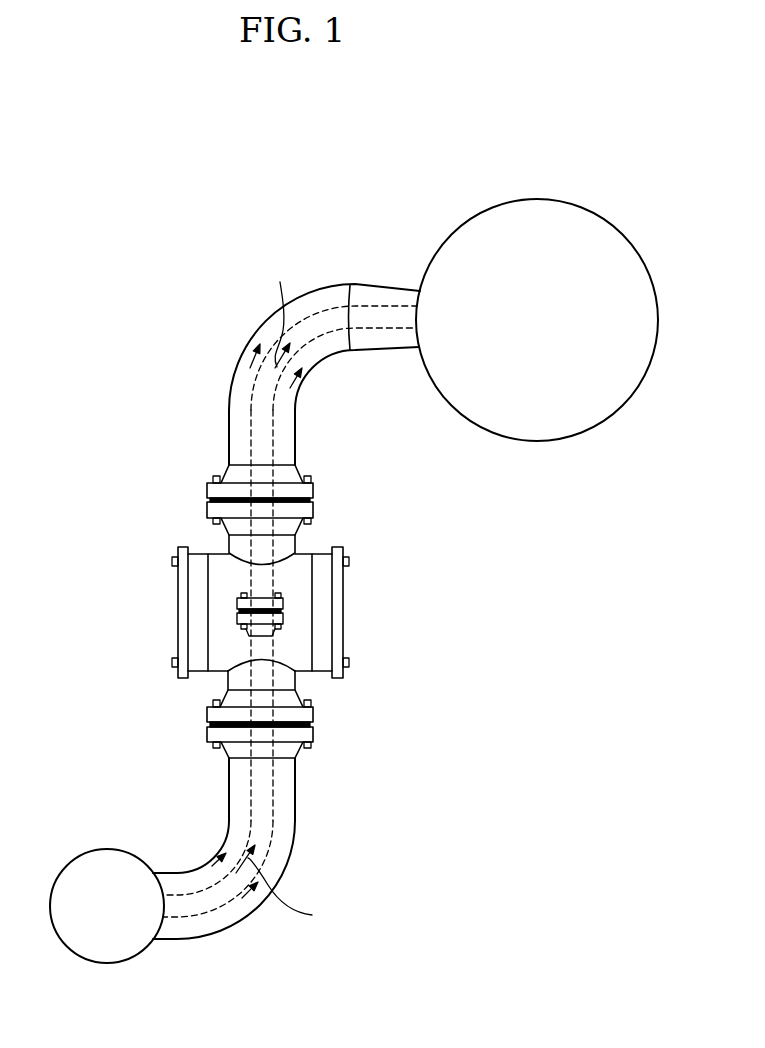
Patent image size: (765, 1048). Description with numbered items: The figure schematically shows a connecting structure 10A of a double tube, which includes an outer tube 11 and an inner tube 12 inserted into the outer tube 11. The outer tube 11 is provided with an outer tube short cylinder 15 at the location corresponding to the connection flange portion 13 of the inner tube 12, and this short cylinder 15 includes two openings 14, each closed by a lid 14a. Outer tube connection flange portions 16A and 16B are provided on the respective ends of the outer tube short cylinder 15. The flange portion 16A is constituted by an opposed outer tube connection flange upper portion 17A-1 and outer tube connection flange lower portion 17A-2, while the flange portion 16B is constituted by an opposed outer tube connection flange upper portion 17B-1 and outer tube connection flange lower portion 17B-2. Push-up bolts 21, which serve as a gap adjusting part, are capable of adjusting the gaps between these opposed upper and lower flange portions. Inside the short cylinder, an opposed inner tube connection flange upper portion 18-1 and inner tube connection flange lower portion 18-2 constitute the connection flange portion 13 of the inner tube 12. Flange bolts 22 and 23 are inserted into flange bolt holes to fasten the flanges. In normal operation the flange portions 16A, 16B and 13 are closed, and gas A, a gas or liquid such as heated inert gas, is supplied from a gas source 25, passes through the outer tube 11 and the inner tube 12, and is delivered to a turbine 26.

The connecting structure of the double tube 10A is at (434, 874).
The outer tube 11 is at (244, 350).
The inner tube 12 is at (251, 398).
The connection flange portion 13 is at (162, 615).
The opening 14 is at (302, 619).
The lid 14a is at (344, 593).
The outer tube short cylinder 15 is at (300, 537).
The outer tube connection flange portion 16A is at (172, 501).
The outer tube connection flange portion 16B is at (356, 719).
The outer tube connection flange upper portion 17A-1 is at (207, 488).
The outer tube connection flange lower portion 17A-2 is at (207, 513).
The outer tube connection flange upper portion 17B-1 is at (316, 712).
The outer tube connection flange lower portion 17B-2 is at (316, 735).
The inner tube connection flange upper portion 18-1 is at (237, 603).
The inner tube connection flange lower portion 18-2 is at (237, 618).
The push-up bolt 21 is at (316, 519).
The flange bolt 22 is at (308, 479).
The flange bolt 23 is at (349, 661).
The gas source 25 is at (104, 848).
The turbine 26 is at (578, 199).